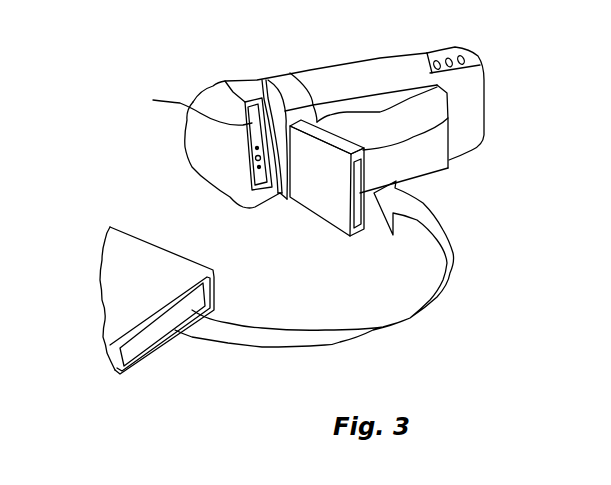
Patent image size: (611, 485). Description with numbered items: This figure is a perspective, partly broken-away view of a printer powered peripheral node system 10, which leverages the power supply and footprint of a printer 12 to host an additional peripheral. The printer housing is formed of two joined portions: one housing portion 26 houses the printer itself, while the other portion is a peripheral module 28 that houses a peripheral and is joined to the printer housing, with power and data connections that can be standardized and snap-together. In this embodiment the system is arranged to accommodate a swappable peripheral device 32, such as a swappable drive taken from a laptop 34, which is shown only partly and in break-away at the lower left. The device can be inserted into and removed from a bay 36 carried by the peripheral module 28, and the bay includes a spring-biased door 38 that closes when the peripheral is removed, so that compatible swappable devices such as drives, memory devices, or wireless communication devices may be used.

The printer powered peripheral node system 10 is at (342, 192).
The printer 12 is at (387, 105).
The housing portion 26 is at (314, 67).
The peripheral module 28 is at (231, 82).
The swappable peripheral device 32 is at (338, 213).
The laptop 34 is at (195, 248).
The bay 36 is at (267, 83).
The spring-biased door 38 is at (201, 141).